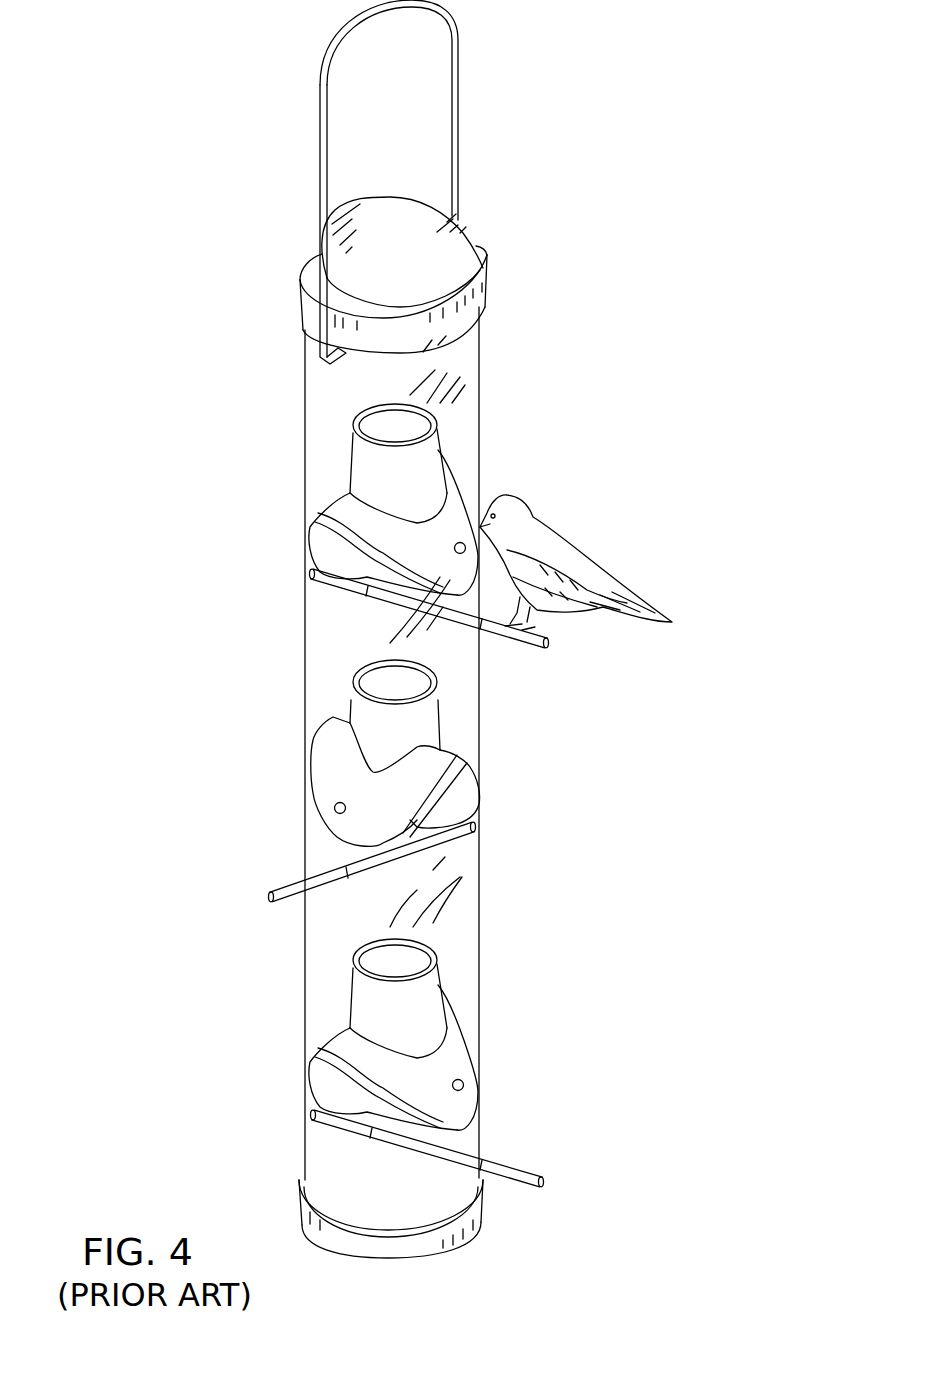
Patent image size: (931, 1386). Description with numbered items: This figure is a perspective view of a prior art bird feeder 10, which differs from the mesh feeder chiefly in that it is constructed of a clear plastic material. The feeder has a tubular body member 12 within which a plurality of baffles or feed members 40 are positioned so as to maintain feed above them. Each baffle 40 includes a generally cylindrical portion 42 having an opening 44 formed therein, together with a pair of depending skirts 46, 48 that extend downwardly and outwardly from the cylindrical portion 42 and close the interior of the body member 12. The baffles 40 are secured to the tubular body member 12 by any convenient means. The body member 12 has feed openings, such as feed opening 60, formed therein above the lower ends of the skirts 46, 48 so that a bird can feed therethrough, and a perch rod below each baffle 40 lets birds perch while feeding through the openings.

The bird feeder 10 is at (508, 354).
The body member 12 is at (305, 470).
The baffle 40 is at (460, 482).
The cylindrical portion 42 is at (480, 454).
The opening 44 is at (471, 398).
The skirt 46 is at (322, 544).
The skirt 48 is at (542, 522).
The feed opening 60 is at (560, 529).